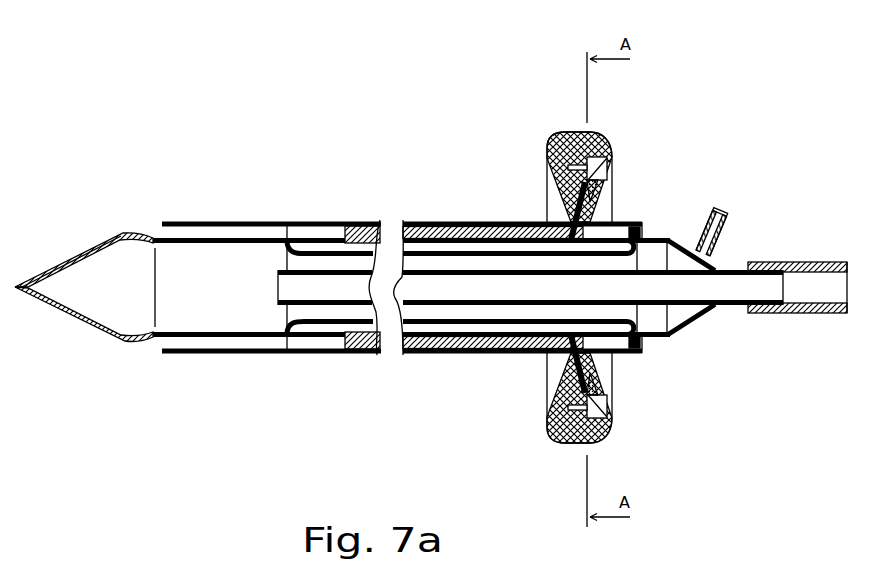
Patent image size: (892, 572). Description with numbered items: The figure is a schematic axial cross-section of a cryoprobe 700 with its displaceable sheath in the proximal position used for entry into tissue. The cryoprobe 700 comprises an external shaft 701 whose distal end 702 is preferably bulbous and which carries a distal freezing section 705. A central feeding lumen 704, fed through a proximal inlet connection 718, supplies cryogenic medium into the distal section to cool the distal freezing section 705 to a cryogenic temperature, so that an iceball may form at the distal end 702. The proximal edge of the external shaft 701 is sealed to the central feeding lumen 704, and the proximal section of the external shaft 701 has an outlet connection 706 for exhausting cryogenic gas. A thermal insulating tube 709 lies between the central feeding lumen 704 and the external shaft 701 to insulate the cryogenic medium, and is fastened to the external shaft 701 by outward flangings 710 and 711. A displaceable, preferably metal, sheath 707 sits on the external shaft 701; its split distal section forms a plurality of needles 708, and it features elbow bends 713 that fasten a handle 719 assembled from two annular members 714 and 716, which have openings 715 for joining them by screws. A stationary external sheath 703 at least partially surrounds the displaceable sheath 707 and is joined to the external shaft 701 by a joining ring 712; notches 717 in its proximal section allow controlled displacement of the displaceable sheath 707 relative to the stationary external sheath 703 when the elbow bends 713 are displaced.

The cryoprobe 700 is at (285, 131).
The external shaft 701 is at (287, 222).
The distal end 702 is at (62, 264).
The stationary external sheath 703 is at (462, 222).
The central feeding lumen 704 is at (443, 305).
The distal freezing section 705 is at (197, 238).
The outlet connection 706 is at (706, 214).
The displaceable sheath 707 is at (403, 340).
The needles 708 is at (220, 343).
The thermal insulating tube 709 is at (523, 325).
The outward flanging 710 is at (312, 328).
The outward flanging 711 is at (663, 238).
The joining ring 712 is at (640, 346).
The elbow bends 713 is at (588, 218).
The annular member 714 is at (547, 142).
The openings 715 is at (578, 441).
The annular member 716 is at (600, 383).
The notches 717 is at (617, 354).
The proximal inlet connection 718 is at (815, 262).
The handle 719 is at (567, 92).